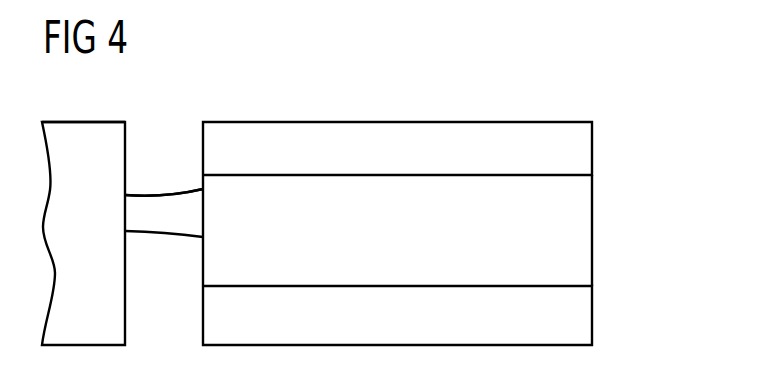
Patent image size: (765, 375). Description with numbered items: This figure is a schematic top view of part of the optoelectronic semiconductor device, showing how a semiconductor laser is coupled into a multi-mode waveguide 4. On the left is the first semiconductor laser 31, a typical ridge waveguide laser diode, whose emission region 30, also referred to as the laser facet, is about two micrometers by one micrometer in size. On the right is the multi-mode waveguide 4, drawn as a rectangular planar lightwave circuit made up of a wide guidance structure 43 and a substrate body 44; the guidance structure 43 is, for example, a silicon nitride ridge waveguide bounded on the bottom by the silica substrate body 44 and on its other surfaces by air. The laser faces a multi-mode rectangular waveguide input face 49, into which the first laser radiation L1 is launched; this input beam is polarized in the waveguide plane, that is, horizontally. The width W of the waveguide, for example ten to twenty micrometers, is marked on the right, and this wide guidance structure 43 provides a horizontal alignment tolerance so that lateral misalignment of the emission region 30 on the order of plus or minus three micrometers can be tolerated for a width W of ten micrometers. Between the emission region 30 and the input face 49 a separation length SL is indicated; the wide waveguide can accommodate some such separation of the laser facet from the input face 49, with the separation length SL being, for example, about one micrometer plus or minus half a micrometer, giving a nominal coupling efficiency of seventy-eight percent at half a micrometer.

The multi-mode waveguide 4 is at (595, 105).
The emission region 30 is at (125, 215).
The first semiconductor laser 31 is at (83, 130).
The guidance structure 43 is at (583, 316).
The substrate body 44 is at (583, 148).
The input face 49 is at (205, 228).
The first laser radiation L1 is at (166, 200).
The separation length SL is at (203, 253).
The width of the second branch W is at (593, 175).